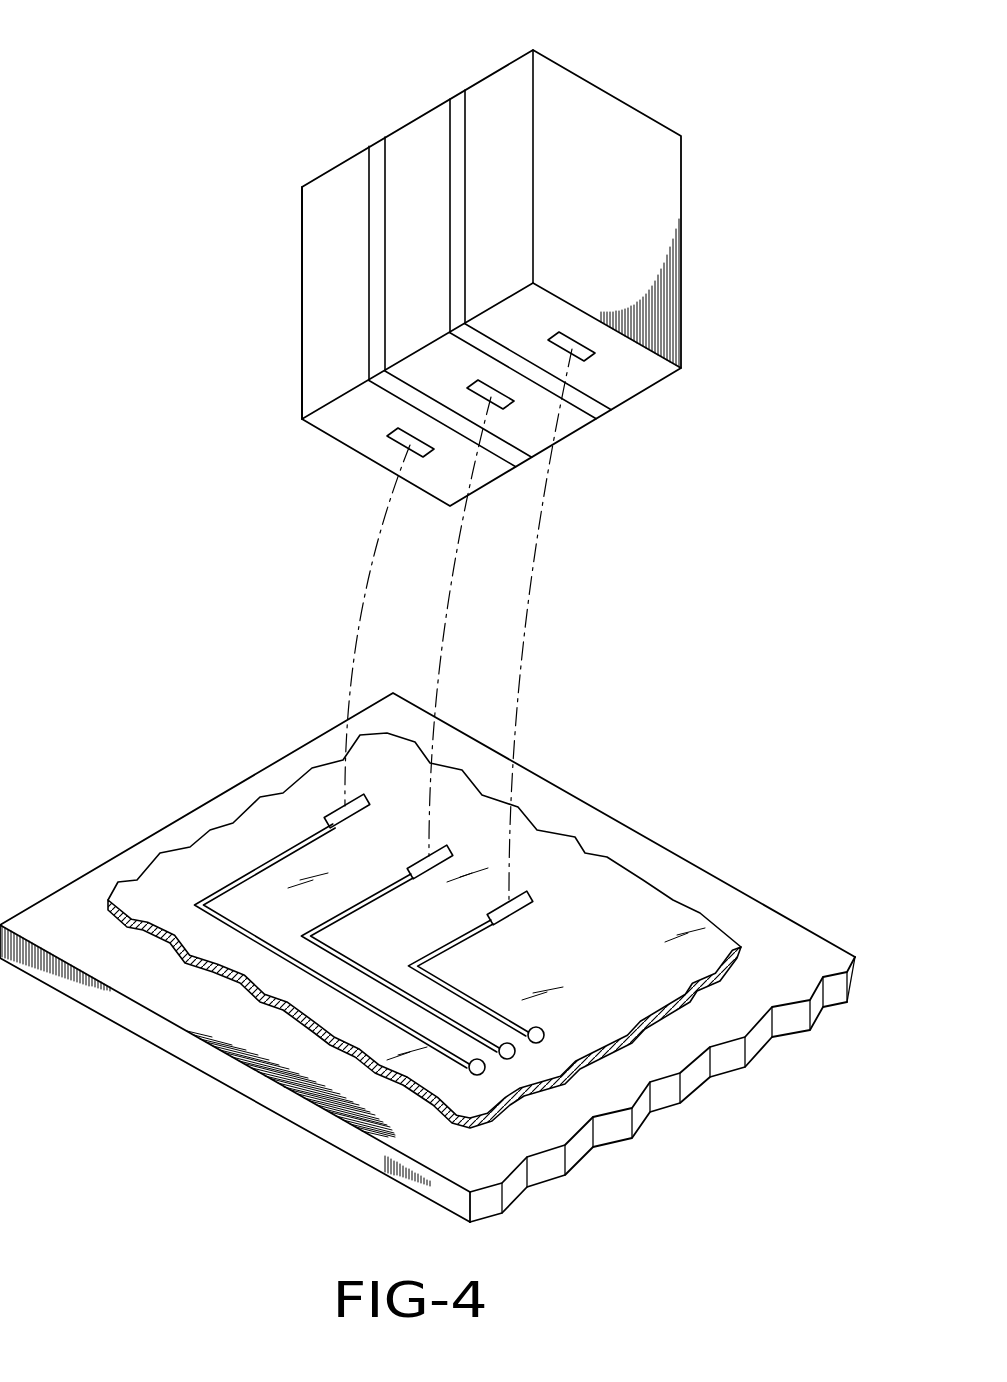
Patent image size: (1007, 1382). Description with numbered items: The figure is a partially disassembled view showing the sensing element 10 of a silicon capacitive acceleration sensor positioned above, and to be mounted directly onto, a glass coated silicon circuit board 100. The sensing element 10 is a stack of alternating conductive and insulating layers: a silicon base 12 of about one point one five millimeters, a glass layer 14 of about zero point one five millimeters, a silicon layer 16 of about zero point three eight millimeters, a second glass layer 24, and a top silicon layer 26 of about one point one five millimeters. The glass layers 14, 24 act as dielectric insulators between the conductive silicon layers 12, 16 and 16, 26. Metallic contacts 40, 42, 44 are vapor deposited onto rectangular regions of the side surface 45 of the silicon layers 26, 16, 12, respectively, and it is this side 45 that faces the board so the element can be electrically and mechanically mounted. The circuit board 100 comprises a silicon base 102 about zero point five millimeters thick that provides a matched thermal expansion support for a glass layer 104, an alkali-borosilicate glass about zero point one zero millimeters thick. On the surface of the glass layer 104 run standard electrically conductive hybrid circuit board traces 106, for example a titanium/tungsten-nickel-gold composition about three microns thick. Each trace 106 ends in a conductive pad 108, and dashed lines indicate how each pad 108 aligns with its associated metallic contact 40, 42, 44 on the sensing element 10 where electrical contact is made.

The sensing element 10 is at (300, 215).
The base 12 is at (338, 192).
The layer 14 is at (377, 152).
The layer 16 is at (423, 143).
The layer 24 is at (460, 97).
The layer 26 is at (501, 97).
The metallic contact 40 is at (560, 337).
The metallic contact 42 is at (480, 385).
The metallic contact 44 is at (398, 433).
The side surface 45 is at (628, 367).
The circuit board 100 is at (80, 866).
The silicon base 102 is at (197, 1063).
The layer of glass 104 is at (224, 835).
The circuit board traces 106 is at (293, 843).
The conductive pad 108 is at (335, 813).